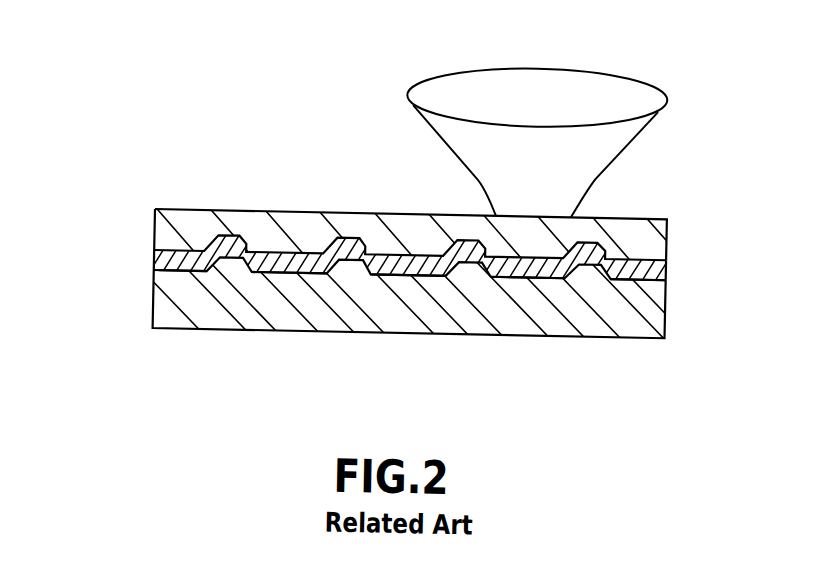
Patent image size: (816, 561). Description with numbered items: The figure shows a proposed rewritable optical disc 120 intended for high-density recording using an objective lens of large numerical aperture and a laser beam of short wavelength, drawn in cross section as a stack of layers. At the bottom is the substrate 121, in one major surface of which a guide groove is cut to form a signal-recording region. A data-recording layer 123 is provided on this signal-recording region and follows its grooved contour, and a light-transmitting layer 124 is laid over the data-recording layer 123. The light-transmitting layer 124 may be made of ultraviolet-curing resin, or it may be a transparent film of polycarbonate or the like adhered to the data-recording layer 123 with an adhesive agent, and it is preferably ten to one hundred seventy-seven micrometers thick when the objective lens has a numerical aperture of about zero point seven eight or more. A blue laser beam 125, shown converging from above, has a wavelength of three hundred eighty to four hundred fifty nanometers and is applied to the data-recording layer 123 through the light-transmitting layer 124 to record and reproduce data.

The rewritable optical disc 120 is at (322, 113).
The substrate 121 is at (164, 308).
The data-recording layer 123 is at (166, 260).
The light-transmitting layer 124 is at (160, 233).
The blue laser beam 125 is at (612, 151).